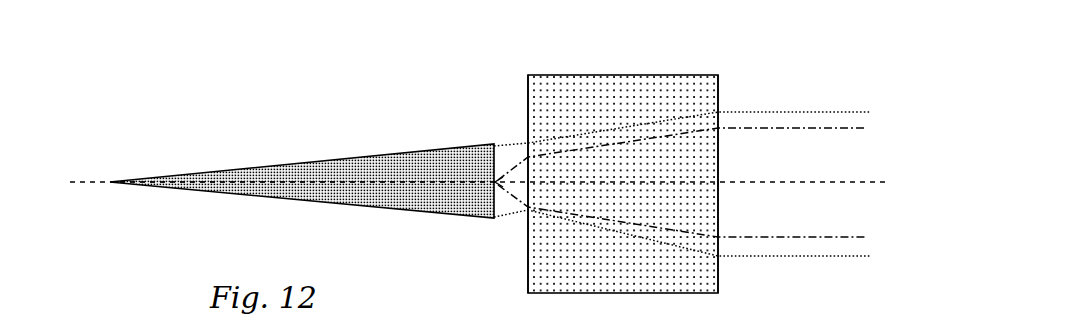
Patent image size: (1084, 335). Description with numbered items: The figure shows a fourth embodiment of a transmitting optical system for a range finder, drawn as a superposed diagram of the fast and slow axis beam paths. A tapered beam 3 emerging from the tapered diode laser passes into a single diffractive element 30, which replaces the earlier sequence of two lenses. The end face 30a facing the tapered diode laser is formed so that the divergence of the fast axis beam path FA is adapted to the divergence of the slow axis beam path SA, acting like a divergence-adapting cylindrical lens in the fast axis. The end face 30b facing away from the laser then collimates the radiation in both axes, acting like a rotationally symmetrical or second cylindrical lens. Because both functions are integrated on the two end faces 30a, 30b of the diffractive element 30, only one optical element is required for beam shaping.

The light beam cone 3 is at (306, 171).
The diffractive element 30 is at (623, 163).
The end face facing the tapered diode laser 30a is at (474, 184).
The end face facing away from the tapered diode laser 30b is at (772, 178).
The slow axis beam path SA is at (644, 192).
The fast axis beam path FA is at (681, 225).